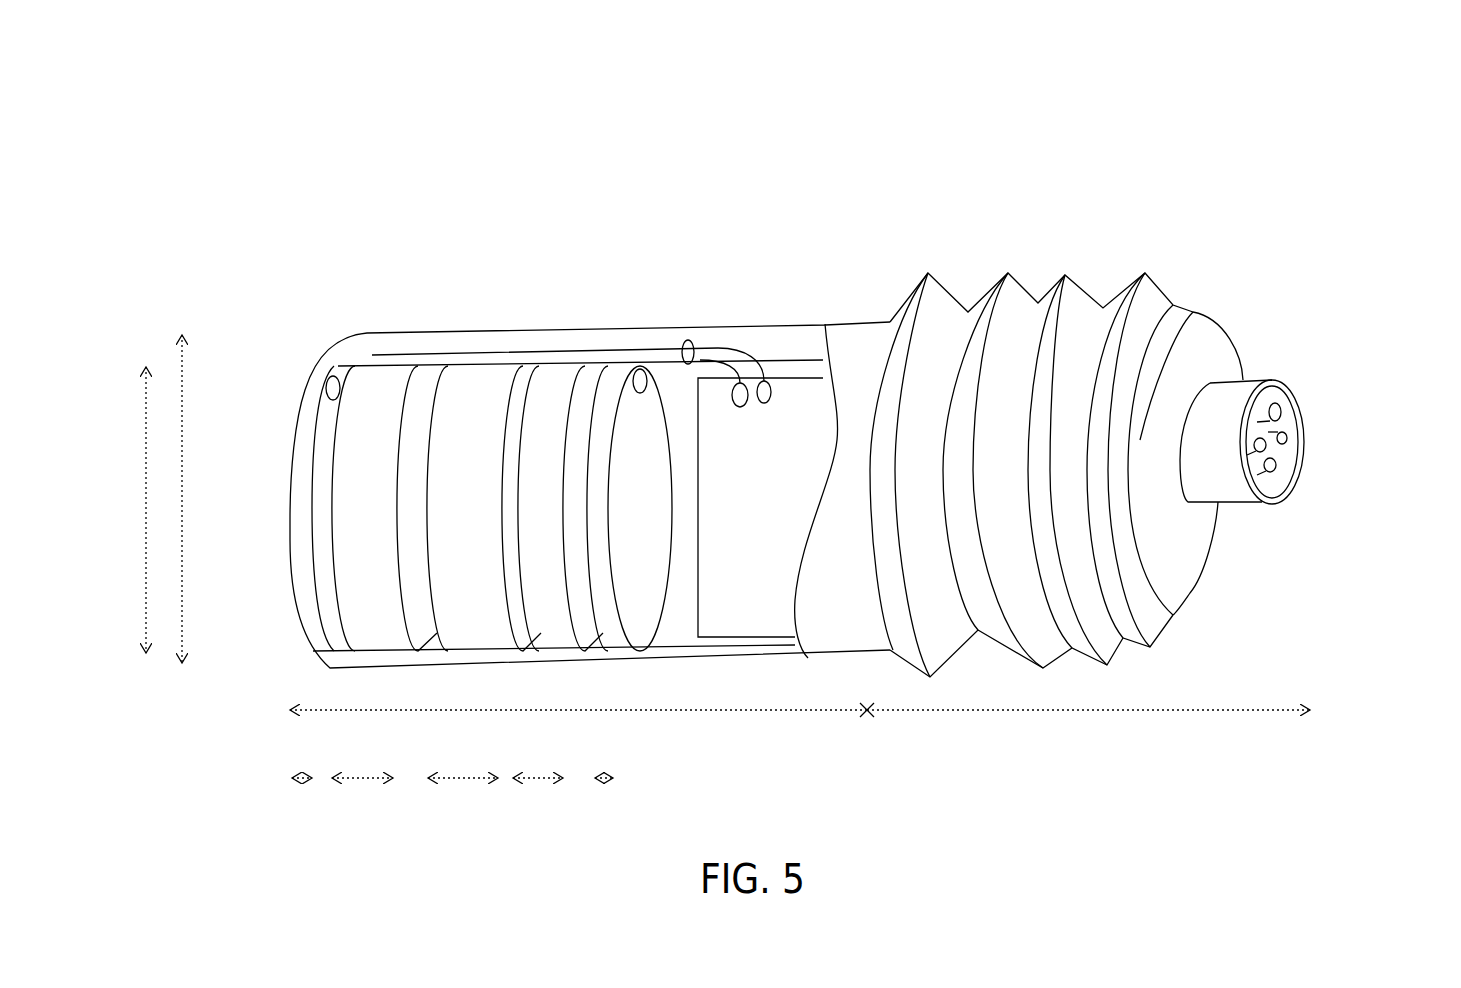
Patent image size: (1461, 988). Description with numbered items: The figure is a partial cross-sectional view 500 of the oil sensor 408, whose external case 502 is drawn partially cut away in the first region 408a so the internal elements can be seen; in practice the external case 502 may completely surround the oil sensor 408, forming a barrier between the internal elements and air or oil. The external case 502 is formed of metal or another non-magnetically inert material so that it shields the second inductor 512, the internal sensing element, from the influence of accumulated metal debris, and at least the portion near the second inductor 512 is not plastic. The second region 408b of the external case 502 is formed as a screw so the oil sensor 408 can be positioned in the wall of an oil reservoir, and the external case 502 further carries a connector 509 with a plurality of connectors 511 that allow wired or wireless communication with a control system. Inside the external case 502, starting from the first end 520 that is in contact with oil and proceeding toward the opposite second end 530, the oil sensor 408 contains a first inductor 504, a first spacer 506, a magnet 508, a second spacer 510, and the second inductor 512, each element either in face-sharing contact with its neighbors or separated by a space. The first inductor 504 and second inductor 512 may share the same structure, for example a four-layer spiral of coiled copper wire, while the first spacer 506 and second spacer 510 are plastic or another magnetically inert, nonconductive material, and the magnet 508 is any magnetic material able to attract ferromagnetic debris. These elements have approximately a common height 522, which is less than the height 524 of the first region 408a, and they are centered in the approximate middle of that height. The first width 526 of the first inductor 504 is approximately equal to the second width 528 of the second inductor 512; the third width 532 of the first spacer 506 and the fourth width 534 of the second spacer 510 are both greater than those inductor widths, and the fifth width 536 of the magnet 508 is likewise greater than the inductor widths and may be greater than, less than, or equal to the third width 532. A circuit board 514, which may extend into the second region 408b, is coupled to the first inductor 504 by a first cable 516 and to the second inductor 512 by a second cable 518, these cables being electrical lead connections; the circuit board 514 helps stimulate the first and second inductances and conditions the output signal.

The partial cross-sectional view 500 is at (1345, 107).
The oil sensor 408 is at (1218, 223).
The first region 408a is at (410, 707).
The second region 408b is at (1037, 710).
The external case 502 is at (405, 333).
The first inductor 504 is at (313, 402).
The first spacer 506 is at (381, 526).
The magnet 508 is at (484, 526).
The second spacer 510 is at (556, 526).
The second inductor 512 is at (656, 526).
The circuit board 514 is at (769, 526).
The first cable 516 is at (480, 353).
The second cable 518 is at (655, 358).
The first end 520 is at (227, 330).
The height 522 is at (146, 597).
The height of the first region 524 is at (182, 667).
The first width 526 is at (295, 775).
The second width 528 is at (593, 777).
The second end 530 is at (1315, 337).
The third width 532 is at (373, 777).
The fourth width 534 is at (517, 777).
The fifth width 536 is at (447, 778).
The connector 509 is at (1298, 385).
The plurality of connectors 511 is at (1283, 427).